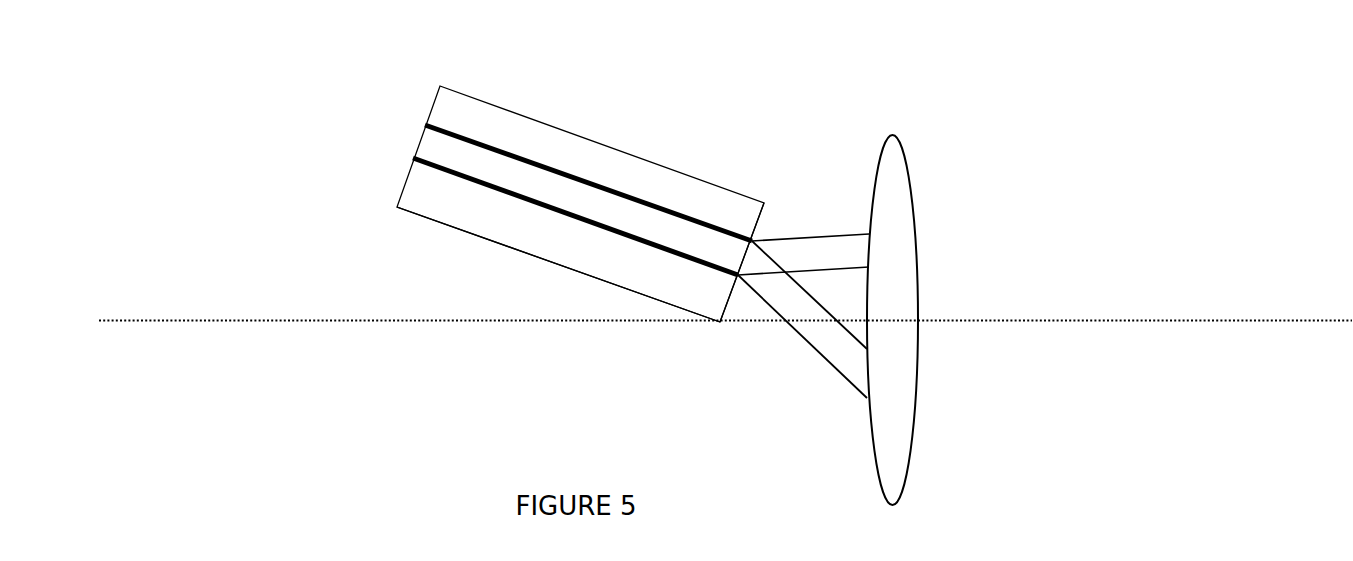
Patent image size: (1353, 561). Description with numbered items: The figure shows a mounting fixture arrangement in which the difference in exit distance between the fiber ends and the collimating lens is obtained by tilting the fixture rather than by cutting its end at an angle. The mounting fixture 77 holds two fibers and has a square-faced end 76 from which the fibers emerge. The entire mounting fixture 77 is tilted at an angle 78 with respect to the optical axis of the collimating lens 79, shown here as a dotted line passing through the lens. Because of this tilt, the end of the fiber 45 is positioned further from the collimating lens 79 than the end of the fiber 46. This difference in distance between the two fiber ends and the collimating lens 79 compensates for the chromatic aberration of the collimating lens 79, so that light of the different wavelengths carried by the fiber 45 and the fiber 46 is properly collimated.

The fiber 45 is at (450, 175).
The fiber 46 is at (472, 137).
The square-faced end 76 is at (762, 220).
The mounting fixture 77 is at (602, 138).
The angle 78 is at (603, 283).
The collimating lens 79 is at (902, 160).